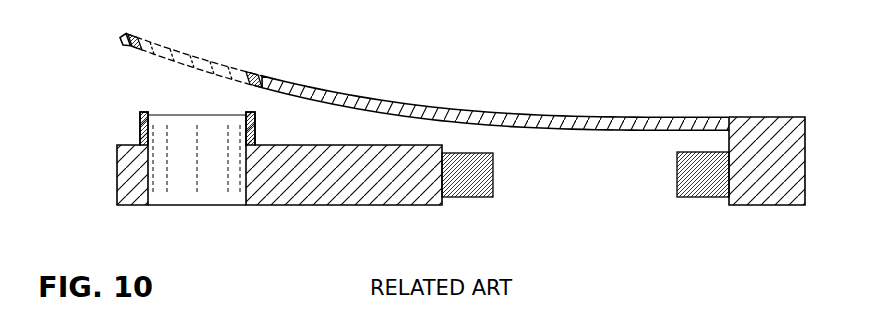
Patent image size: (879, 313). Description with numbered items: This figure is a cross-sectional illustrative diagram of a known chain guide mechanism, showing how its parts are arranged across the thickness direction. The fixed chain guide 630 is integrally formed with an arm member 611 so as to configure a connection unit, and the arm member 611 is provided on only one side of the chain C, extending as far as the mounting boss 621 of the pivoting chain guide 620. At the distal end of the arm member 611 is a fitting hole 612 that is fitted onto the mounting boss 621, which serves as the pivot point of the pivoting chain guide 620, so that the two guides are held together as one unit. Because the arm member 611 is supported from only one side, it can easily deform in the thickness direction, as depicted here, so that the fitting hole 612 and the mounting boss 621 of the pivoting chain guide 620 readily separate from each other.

The arm member 611 is at (585, 119).
The fitting hole 612 is at (222, 64).
The pivoting chain guide 620 is at (356, 188).
The mounting boss 621 is at (140, 121).
The fixed chain guide 630 is at (765, 188).
The chain C is at (478, 168).